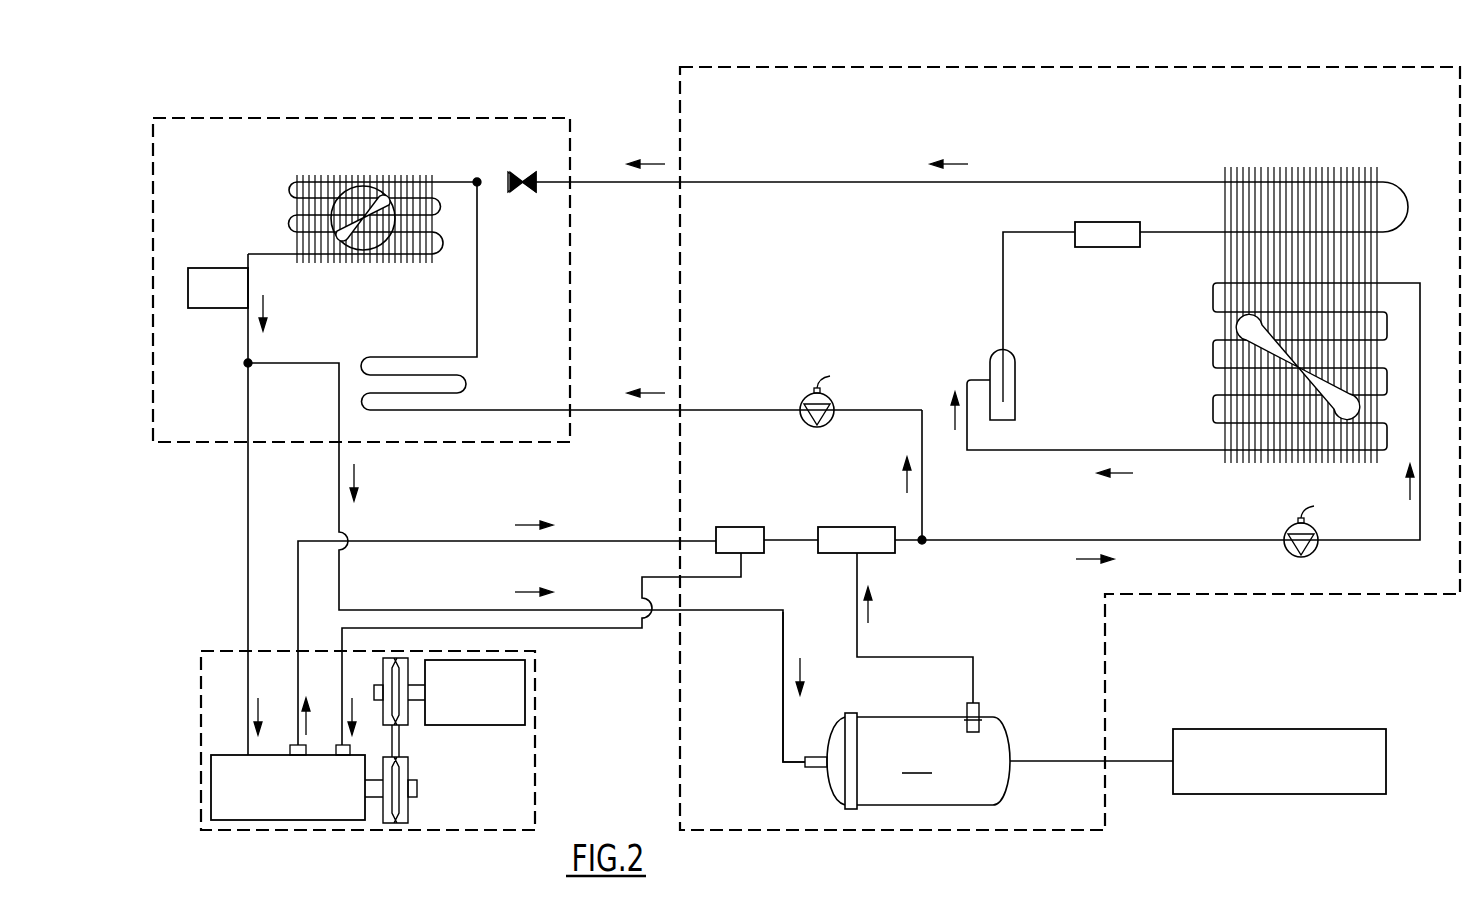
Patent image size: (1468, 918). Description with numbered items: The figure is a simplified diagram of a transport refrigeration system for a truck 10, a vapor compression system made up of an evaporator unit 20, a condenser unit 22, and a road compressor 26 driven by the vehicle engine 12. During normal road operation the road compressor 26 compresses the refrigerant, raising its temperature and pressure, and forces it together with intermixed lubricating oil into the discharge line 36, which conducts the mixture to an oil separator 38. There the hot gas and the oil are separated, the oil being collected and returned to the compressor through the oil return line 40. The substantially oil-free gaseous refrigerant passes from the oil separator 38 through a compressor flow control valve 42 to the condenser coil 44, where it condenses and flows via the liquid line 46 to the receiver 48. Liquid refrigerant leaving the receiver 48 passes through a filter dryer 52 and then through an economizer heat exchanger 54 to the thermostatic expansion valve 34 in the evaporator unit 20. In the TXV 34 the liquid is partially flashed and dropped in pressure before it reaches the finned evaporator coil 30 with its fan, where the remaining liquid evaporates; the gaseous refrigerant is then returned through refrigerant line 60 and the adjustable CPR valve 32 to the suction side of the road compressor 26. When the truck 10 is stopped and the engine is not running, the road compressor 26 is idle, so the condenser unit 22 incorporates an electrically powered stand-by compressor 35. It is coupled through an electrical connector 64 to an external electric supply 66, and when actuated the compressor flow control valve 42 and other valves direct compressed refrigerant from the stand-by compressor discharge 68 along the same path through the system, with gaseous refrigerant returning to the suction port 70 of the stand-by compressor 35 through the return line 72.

The truck 10 is at (478, 843).
The vehicle engine 12 is at (445, 725).
The evaporator unit 20 is at (412, 117).
The condenser unit 22 is at (1025, 67).
The road compressor 26 is at (211, 804).
The evaporator coil 30 is at (360, 182).
The CPR valve 32 is at (220, 310).
The thermostatic expansion valve 34 is at (517, 193).
The stand-by compressor 35 is at (918, 761).
The discharge line 36 is at (322, 540).
The oil separator 38 is at (440, 260).
The oil return line 40 is at (640, 577).
The compressor flow control valve 42 is at (877, 527).
The condenser coil 44 is at (1217, 406).
The liquid line 46 is at (1040, 450).
The receiver 48 is at (1017, 375).
The filter dryer 52 is at (1094, 247).
The economizer heat exchanger 54 is at (1383, 189).
The refrigerant line 60 is at (289, 362).
The electrical connector 64 is at (1029, 762).
The external electric supply 66 is at (1293, 728).
The stand-by compressor discharge 68 is at (976, 696).
The suction port 70 is at (810, 768).
The return line 72 is at (783, 704).